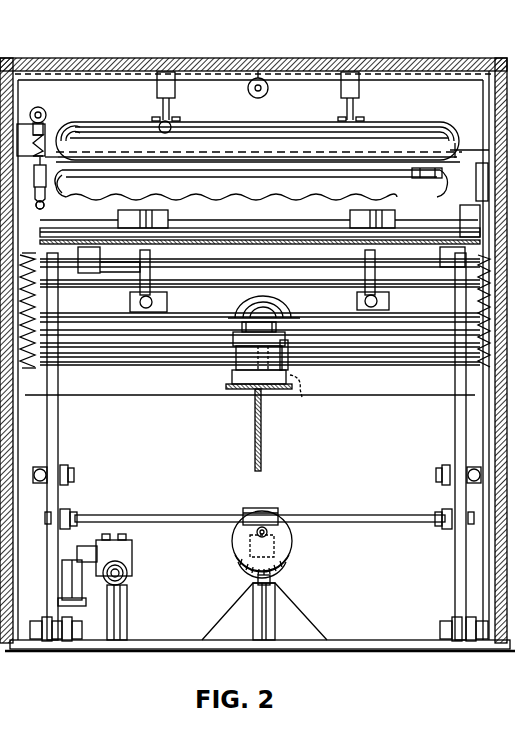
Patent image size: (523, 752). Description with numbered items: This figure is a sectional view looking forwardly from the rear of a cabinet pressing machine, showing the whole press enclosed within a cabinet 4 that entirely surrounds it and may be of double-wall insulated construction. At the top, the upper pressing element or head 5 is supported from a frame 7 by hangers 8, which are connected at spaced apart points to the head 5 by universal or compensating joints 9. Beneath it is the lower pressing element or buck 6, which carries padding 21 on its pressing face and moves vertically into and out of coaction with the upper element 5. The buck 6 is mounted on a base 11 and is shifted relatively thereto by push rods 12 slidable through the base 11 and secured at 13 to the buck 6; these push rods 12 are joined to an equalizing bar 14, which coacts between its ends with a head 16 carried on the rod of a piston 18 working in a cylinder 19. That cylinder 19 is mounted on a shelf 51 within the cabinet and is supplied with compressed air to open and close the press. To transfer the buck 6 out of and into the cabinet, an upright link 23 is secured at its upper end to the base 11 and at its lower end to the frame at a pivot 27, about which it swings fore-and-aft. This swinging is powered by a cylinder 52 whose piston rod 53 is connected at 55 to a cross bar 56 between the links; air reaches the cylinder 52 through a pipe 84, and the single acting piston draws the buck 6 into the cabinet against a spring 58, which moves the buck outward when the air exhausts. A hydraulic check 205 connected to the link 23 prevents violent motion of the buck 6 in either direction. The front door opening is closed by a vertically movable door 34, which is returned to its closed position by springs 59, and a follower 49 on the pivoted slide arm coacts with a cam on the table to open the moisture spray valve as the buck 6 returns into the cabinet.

The cabinet 4 is at (480, 60).
The upper pressing element 5 is at (426, 122).
The lower pressing element 6 is at (448, 188).
The frame 7 is at (320, 76).
The hangers 8 is at (174, 102).
The universal joints 9 is at (142, 120).
The base 11 is at (106, 260).
The push rods 12 is at (120, 288).
The securing points 13 is at (116, 222).
The equalizing bar 14 is at (294, 305).
The head 16 is at (276, 326).
The piston 18 is at (306, 394).
The cylinder 19 is at (231, 360).
The padding 21 is at (82, 188).
The link 23 is at (60, 414).
The pivot 27 is at (434, 628).
The door 34 is at (472, 159).
The follower 49 is at (41, 204).
The shelf 51 is at (254, 418).
The cylinder 52 is at (294, 556).
The piston rod 53 is at (257, 534).
The connection 55 is at (266, 508).
The cross bar 56 is at (364, 514).
The spring 58 is at (50, 484).
The springs 59 is at (36, 373).
The pipe 84 is at (268, 594).
The hydraulic check 205 is at (132, 572).